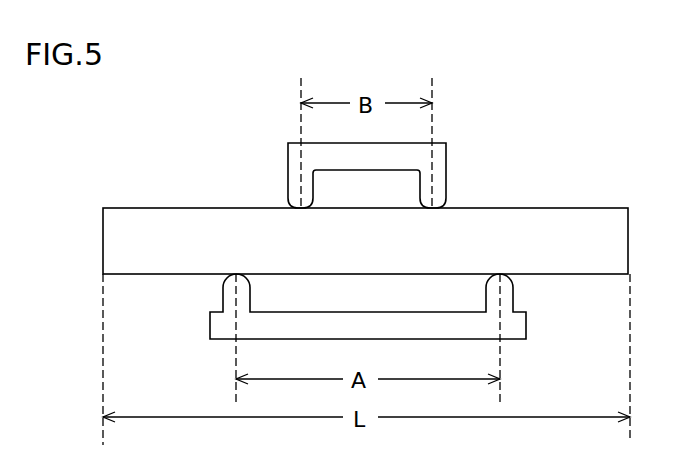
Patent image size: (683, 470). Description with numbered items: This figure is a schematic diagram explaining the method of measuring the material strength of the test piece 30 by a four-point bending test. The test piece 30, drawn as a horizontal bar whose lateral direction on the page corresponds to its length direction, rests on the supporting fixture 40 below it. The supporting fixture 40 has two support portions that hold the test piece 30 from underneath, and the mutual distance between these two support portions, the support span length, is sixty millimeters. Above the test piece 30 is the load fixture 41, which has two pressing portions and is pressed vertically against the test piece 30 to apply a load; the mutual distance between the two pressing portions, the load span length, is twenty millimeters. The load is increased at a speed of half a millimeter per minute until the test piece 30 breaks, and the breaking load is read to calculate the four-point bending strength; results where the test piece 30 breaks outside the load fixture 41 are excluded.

The test piece 30 is at (188, 243).
The supporting fixture 40 is at (222, 328).
The load fixture 41 is at (296, 160).